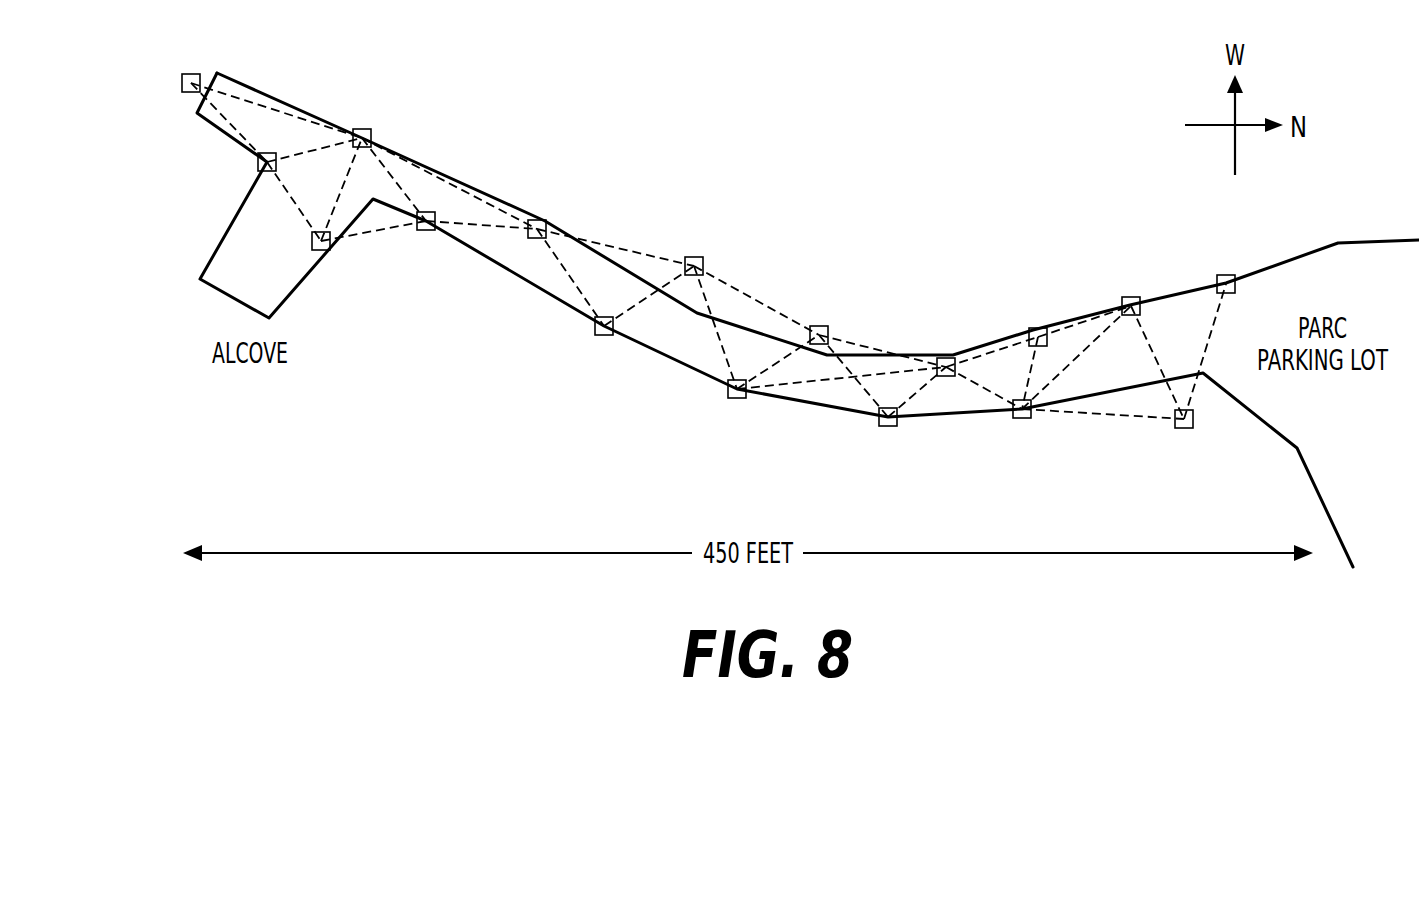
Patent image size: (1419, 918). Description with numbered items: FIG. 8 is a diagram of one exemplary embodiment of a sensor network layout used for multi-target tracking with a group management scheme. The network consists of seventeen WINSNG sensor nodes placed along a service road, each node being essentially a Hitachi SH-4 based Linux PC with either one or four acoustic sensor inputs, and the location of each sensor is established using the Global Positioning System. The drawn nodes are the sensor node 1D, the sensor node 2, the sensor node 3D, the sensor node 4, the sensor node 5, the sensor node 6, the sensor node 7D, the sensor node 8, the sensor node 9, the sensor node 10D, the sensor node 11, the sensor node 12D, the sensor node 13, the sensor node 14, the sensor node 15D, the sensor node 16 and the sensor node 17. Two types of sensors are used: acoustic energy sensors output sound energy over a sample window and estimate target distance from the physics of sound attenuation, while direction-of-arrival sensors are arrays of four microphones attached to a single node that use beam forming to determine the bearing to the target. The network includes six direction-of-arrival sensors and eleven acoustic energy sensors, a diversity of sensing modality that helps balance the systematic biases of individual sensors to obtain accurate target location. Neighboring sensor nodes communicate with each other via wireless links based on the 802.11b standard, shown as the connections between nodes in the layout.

The node 1D (gateway/directional node) 1D is at (191, 65).
The node 2 is at (256, 166).
The node 3D is at (304, 256).
The node 4 is at (362, 120).
The node 5 is at (426, 242).
The node 6 is at (539, 210).
The node 7D is at (595, 348).
The node 8 is at (694, 248).
The node 9 is at (737, 405).
The node 10D is at (824, 317).
The node 11 is at (944, 346).
The node 12D is at (1018, 430).
The node 13 is at (1132, 288).
The node 14 is at (1184, 437).
The node 15D is at (1230, 266).
The node 16 is at (1039, 319).
The node 17 is at (887, 435).